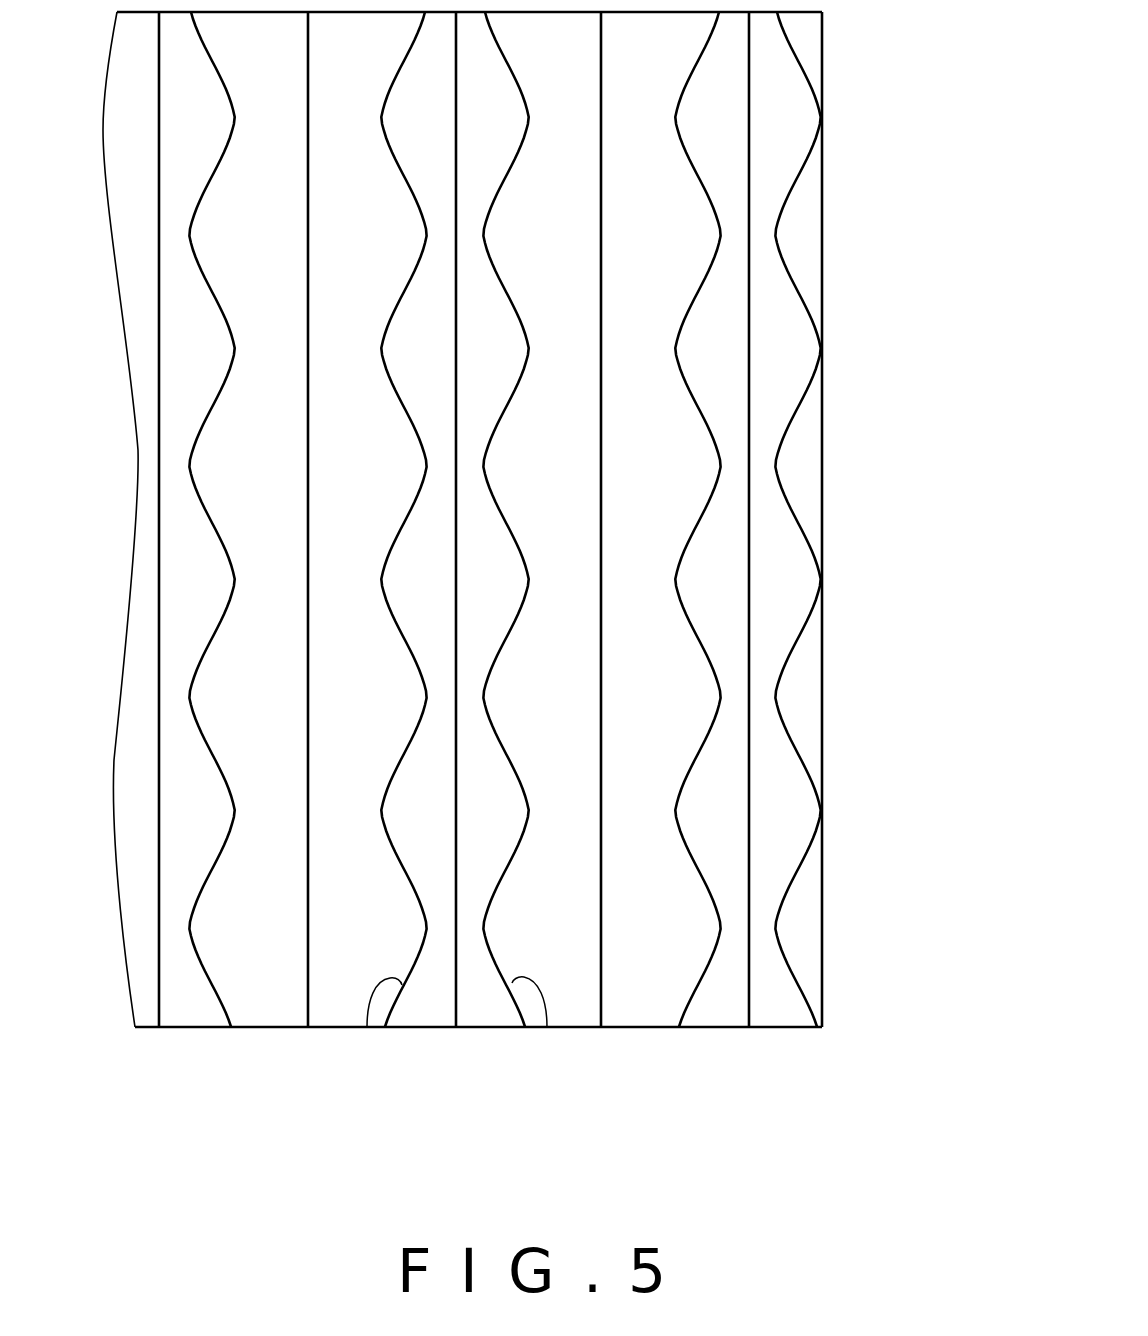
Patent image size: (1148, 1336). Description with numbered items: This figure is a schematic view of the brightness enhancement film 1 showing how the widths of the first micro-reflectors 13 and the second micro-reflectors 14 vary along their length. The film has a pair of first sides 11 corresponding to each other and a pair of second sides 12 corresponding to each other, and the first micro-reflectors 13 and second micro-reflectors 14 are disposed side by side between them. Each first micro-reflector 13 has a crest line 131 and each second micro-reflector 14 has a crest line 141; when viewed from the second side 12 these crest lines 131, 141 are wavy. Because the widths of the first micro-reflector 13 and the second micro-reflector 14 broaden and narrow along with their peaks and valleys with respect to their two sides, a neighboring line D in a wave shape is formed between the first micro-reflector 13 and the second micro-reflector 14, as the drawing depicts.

The brightness enhancement film 1 is at (510, 584).
The first side 11 is at (592, 1030).
The second side 12 is at (826, 444).
The first micro-reflector 13 is at (325, 584).
The crest line 131 is at (308, 885).
The second micro-reflector 14 is at (469, 583).
The crest line 141 is at (458, 897).
The neighboring line D is at (368, 1027).